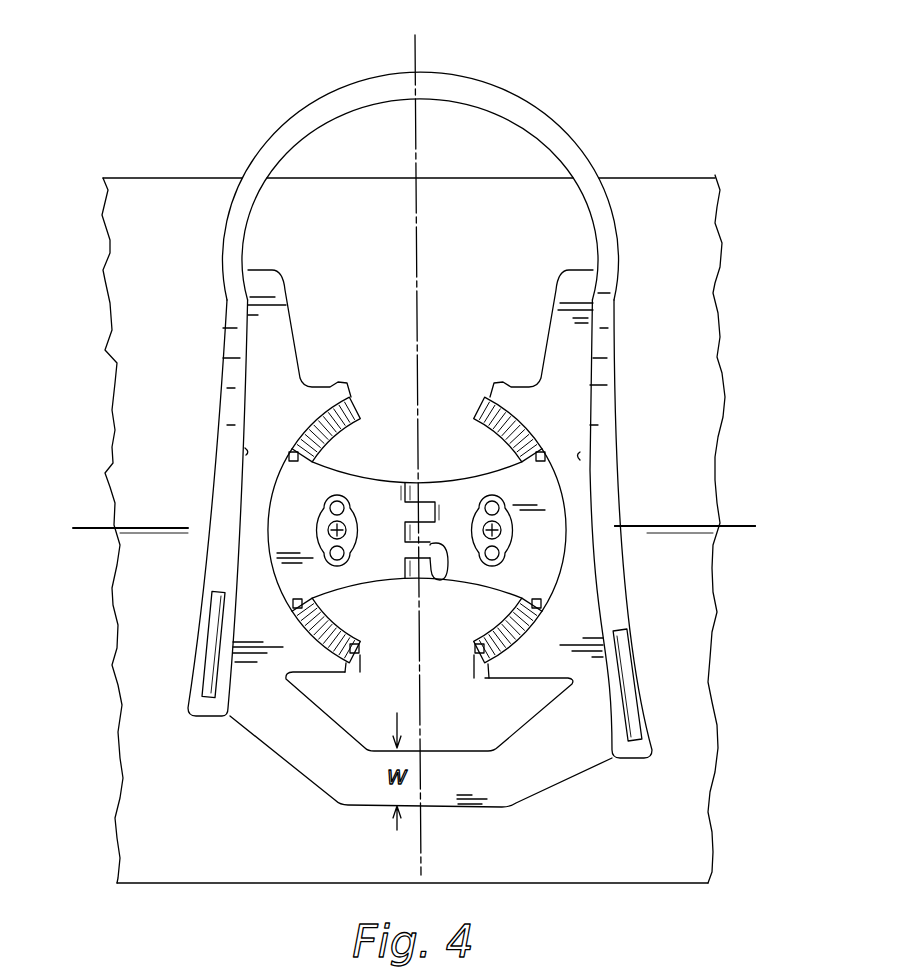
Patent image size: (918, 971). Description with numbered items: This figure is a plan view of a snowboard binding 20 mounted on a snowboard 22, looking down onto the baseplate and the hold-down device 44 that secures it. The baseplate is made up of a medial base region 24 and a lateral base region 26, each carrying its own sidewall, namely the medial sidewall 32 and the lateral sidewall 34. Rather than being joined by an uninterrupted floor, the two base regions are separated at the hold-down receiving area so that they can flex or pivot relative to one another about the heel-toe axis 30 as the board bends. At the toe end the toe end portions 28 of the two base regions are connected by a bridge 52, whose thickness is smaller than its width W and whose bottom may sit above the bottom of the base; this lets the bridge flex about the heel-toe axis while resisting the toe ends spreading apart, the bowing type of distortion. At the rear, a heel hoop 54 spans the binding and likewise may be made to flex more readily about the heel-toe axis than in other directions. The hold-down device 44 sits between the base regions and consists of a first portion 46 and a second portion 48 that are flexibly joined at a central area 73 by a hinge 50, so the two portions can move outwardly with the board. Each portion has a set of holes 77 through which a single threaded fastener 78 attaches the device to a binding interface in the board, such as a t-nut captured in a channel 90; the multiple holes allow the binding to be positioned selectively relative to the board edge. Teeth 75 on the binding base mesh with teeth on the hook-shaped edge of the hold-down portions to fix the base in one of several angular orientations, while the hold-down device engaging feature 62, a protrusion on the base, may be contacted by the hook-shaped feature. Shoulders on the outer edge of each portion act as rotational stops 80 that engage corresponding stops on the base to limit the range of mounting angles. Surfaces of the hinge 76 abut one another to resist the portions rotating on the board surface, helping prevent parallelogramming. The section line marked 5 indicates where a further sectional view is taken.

The section line 5- 5 is at (90, 530).
The binding 20 is at (651, 329).
The snowboard 22 is at (252, 882).
The medial base region 24 is at (292, 413).
The lateral base region 26 is at (552, 423).
The toe end portion 28 is at (188, 663).
The heel-toe axis 30 is at (418, 68).
The medial sidewall 32 is at (245, 448).
The lateral sidewall 34 is at (580, 452).
The hold-down device 44 is at (410, 544).
The first portion of hold-down device 46 is at (292, 488).
The second portion of hold-down device 48 is at (542, 488).
The hinge 50 is at (420, 480).
The bridge 52 is at (443, 803).
The heel hoop 54 is at (495, 92).
The hold-down device engaging feature 62 is at (363, 420).
The central area 73 is at (390, 503).
The teeth 75 is at (322, 641).
The hinge 76 is at (437, 580).
The holes 77 is at (330, 551).
The threaded fastener 78 is at (409, 534).
The rotational stops 80 is at (328, 398).
The channel 90 is at (718, 524).